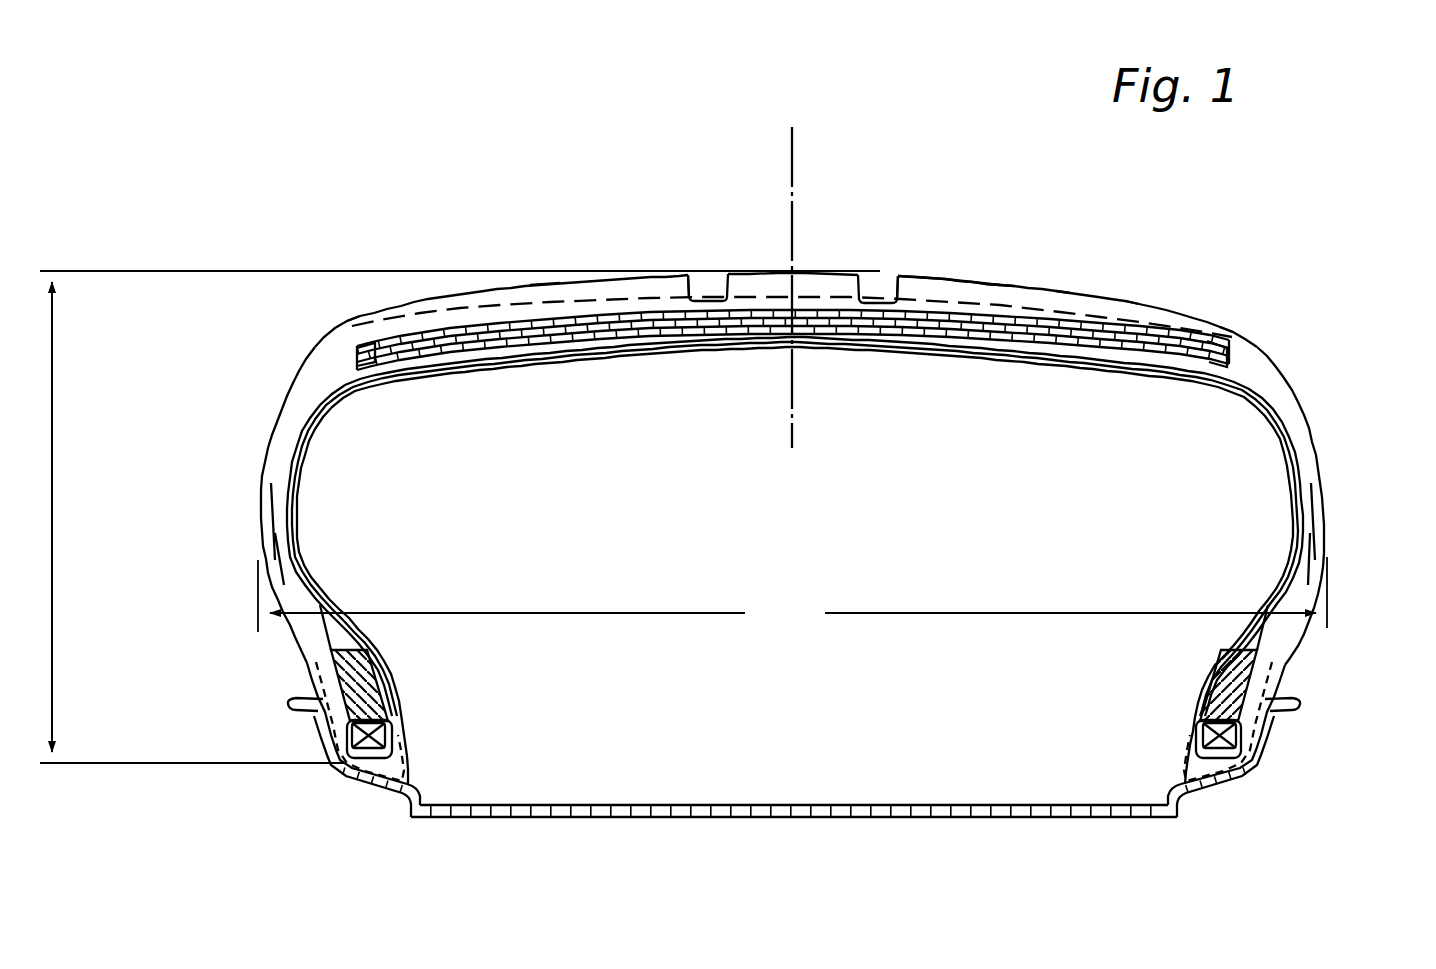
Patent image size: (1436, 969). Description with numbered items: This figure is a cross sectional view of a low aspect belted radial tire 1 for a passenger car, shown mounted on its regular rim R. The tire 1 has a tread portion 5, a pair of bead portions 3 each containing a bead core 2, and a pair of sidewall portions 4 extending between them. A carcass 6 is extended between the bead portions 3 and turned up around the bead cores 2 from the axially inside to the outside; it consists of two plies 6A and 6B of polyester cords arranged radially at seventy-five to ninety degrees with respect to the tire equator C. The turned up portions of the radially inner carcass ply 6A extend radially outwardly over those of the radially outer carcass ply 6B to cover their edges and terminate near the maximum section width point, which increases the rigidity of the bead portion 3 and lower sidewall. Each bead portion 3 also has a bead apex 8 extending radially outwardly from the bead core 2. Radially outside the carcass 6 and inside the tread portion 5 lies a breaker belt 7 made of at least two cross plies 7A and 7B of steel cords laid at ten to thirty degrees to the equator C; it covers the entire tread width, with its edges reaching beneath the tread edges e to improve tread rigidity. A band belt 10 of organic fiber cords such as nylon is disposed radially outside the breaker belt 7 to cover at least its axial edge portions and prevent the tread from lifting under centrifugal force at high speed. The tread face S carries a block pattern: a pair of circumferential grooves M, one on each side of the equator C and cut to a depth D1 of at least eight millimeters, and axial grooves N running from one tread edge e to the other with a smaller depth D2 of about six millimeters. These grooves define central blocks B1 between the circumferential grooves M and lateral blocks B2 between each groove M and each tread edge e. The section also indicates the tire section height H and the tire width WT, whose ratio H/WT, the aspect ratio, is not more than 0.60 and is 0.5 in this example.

The radial tire 1 is at (312, 185).
The bead core 2 is at (348, 775).
The bead portion 3 is at (284, 677).
The sidewall portion 4 is at (237, 428).
The tread portion 5 is at (805, 215).
The carcass 6 is at (795, 526).
The radially inner carcass ply 6A is at (357, 384).
The radially outer carcass ply 6B is at (333, 398).
The breaker belt 7 is at (793, 401).
The breaker ply 7A is at (703, 332).
The breaker ply 7B is at (622, 330).
The bead apex 8 is at (365, 686).
The band belt 10 is at (936, 310).
The tire equator C is at (793, 165).
The depth of the circumferential grooves D1 is at (720, 295).
The central block B1 is at (820, 288).
The depth of the axial grooves D2 is at (1001, 294).
The lateral block B2 is at (546, 295).
The circumferential groove M is at (708, 300).
The axial groove N is at (1100, 300).
The tread face S is at (1133, 292).
The tread edge e is at (363, 286).
The tire section height H is at (460, 517).
The tire width WT is at (792, 595).
The regular rim R is at (470, 816).